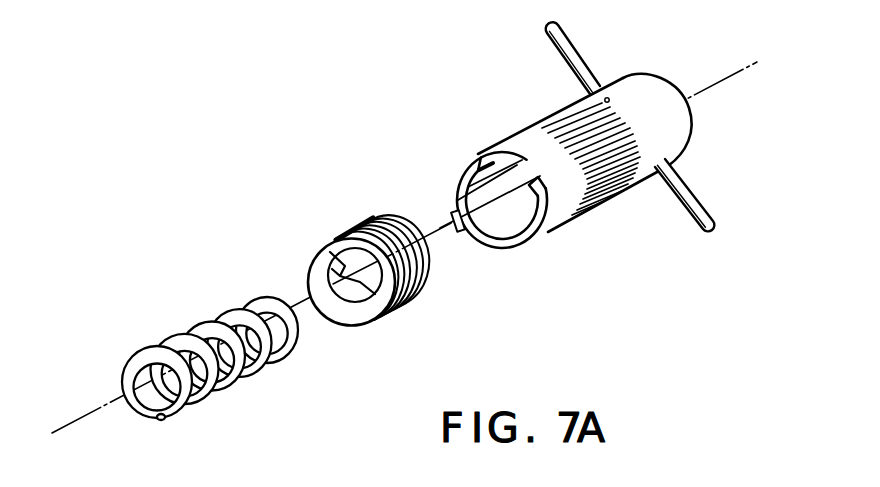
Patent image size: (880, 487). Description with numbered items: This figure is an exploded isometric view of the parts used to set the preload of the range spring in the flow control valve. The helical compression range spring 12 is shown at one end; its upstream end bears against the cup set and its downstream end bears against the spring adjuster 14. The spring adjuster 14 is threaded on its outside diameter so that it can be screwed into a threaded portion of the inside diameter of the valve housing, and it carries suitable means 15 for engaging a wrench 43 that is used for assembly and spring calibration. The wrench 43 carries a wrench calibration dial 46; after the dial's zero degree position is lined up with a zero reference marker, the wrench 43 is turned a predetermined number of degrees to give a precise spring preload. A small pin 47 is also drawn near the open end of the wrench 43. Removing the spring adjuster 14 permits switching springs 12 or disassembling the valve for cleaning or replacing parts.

The range spring 12 is at (252, 320).
The spring adjuster 14 is at (393, 300).
The means for engaging a wrench 15 is at (414, 240).
The wrench 43 is at (667, 93).
The wrench calibration dial 46 is at (565, 114).
The pin 47 is at (458, 232).